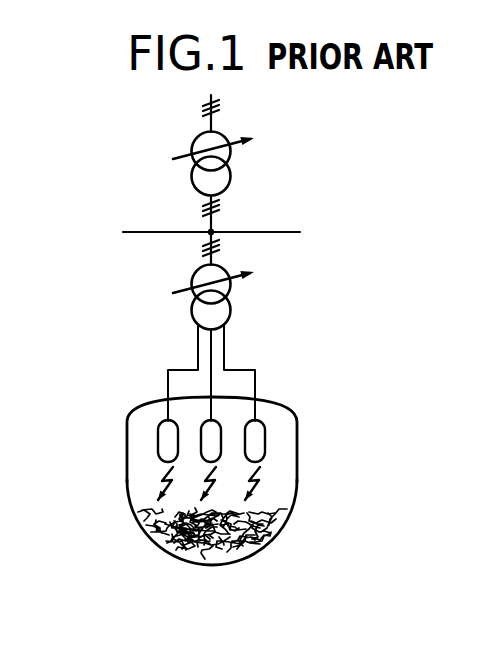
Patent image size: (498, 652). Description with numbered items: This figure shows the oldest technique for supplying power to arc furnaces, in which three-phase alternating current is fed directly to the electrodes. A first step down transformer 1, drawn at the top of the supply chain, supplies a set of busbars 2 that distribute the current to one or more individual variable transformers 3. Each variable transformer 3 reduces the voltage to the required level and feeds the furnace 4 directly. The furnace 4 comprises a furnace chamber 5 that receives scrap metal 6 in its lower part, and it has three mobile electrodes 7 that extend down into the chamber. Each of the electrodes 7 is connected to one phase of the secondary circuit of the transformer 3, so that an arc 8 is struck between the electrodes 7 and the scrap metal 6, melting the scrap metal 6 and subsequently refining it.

The first step down transformer 1 is at (227, 162).
The busbars 2 is at (266, 232).
The variable transformer 3 is at (228, 296).
The furnace 4 is at (216, 452).
The furnace chamber 5 is at (127, 478).
The scrap metal 6 is at (160, 538).
The mobile electrodes 7 is at (265, 457).
The arc 8 is at (258, 492).